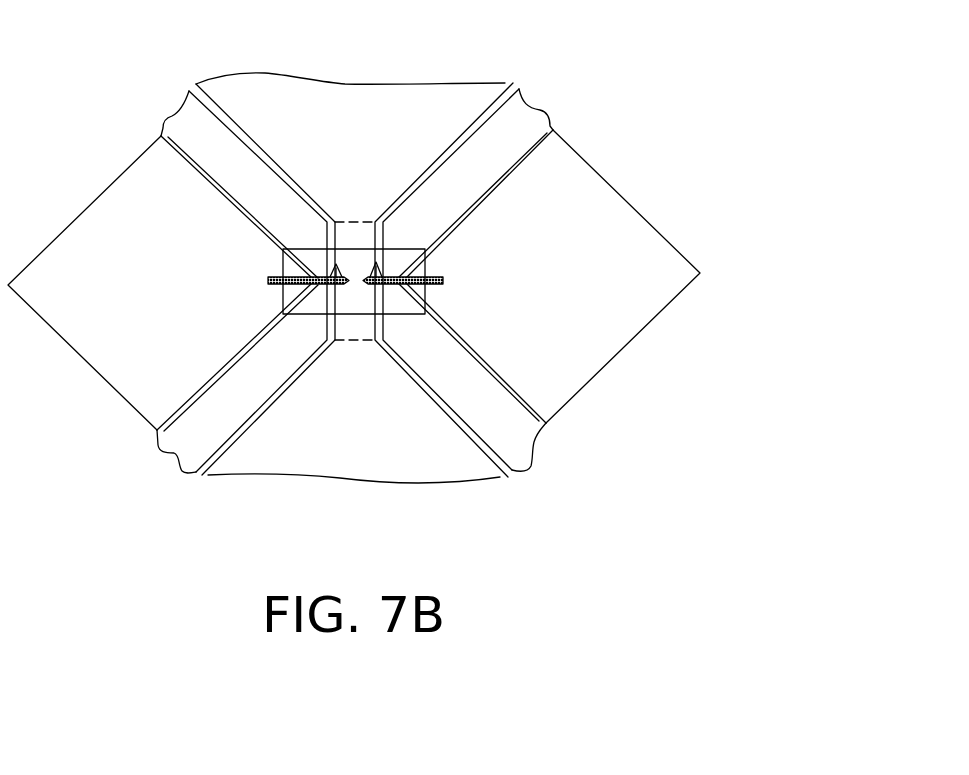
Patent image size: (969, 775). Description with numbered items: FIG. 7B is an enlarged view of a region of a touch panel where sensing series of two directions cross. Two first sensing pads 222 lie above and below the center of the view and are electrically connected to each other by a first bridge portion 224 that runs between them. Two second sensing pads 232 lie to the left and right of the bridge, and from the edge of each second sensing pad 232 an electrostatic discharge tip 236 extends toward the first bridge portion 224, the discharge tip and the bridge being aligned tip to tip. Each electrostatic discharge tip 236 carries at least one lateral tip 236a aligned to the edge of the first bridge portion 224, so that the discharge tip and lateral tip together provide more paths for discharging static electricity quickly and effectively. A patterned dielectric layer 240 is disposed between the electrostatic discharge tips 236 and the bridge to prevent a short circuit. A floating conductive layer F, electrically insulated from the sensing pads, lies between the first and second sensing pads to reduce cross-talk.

The first sensing pad 222 is at (375, 153).
The first bridge portion 224 is at (363, 239).
The second sensing pad 232 is at (152, 299).
The electrostatic discharge tip 236 is at (319, 285).
The lateral tip 236a is at (334, 270).
The patterned dielectric layer 240 is at (353, 314).
The floating conductive layer F is at (520, 124).